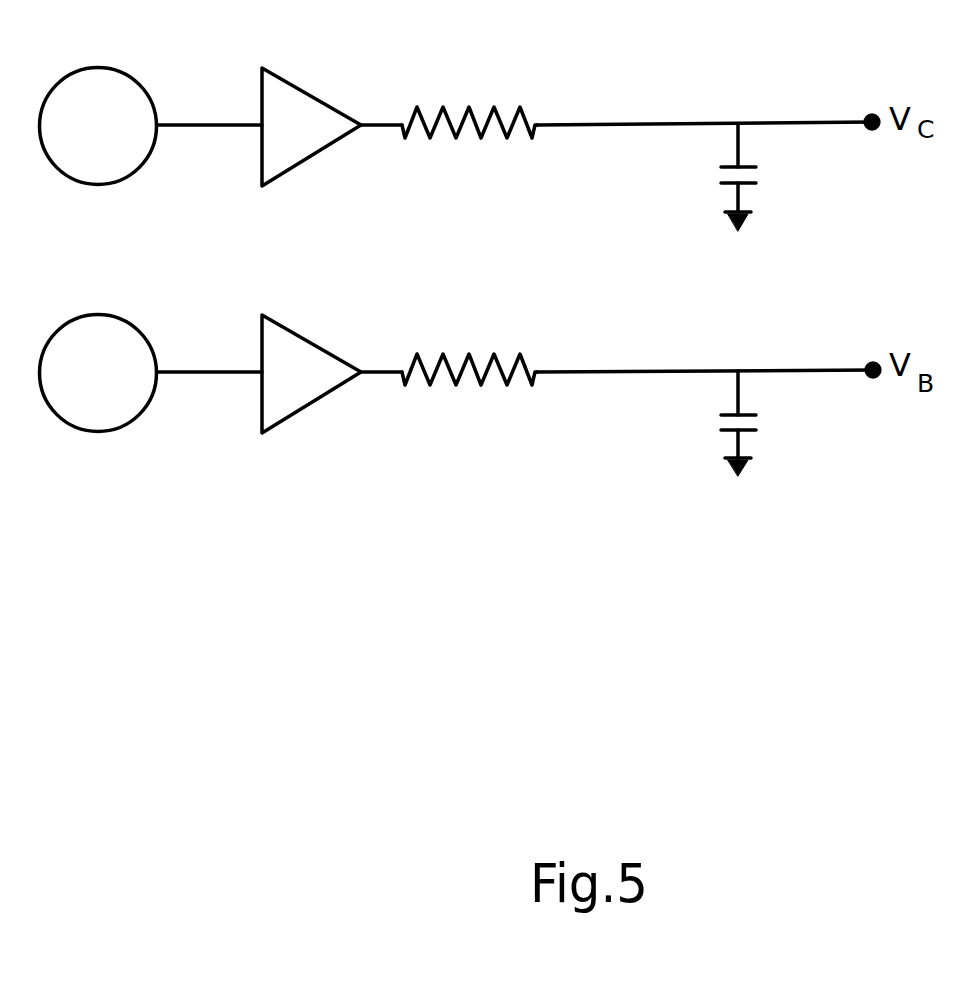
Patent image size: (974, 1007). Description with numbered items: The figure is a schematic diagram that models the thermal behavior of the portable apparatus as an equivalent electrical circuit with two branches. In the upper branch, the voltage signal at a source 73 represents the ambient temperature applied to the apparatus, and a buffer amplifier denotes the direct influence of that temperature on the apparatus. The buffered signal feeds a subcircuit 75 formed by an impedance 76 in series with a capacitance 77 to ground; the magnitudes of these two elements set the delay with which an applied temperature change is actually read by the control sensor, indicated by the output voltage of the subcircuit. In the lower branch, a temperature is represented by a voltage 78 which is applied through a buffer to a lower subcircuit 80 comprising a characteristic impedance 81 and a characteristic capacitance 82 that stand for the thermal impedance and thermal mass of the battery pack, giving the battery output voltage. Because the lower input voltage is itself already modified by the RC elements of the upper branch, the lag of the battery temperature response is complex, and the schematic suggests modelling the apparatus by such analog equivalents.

The source 73 is at (120, 70).
The subcircuit 75 is at (505, 80).
The impedance 76 is at (518, 108).
The capacitance 77 is at (726, 184).
The voltage 78 is at (120, 316).
The lower subcircuit 80 is at (484, 354).
The characteristic impedance 81 is at (458, 382).
The characteristic capacitance 82 is at (726, 431).